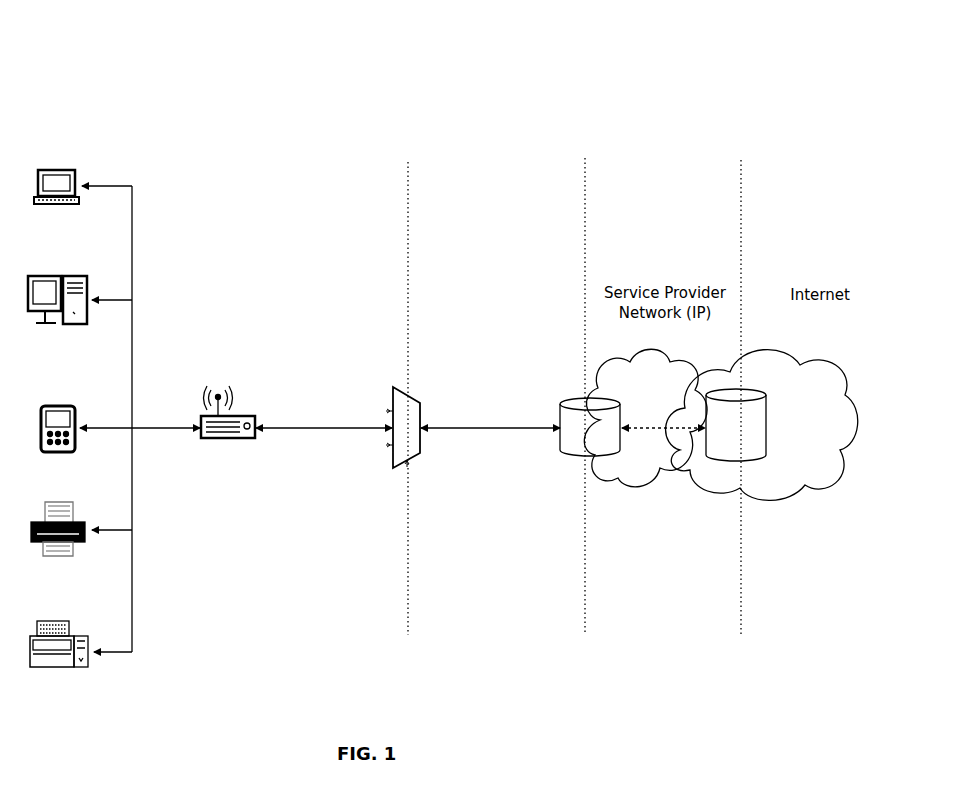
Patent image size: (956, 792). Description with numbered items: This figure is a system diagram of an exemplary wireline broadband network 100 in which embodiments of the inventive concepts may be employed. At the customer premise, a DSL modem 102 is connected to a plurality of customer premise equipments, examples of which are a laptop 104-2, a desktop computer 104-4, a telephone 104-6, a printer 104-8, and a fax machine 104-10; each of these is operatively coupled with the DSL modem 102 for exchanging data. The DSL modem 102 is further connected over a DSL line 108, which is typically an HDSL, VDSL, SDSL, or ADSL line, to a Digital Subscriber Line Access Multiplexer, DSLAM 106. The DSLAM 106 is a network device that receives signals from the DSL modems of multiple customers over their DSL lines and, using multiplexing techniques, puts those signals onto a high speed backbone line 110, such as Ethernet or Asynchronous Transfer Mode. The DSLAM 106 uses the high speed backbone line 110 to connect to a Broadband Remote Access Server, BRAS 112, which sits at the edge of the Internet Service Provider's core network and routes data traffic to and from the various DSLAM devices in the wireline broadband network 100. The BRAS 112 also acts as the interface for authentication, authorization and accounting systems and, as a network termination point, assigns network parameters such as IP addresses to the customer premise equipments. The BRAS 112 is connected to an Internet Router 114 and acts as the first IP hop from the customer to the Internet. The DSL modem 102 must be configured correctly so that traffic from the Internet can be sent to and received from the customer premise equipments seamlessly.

The wireline broadband network 100 is at (116, 60).
The DSL modem 102 is at (244, 417).
The laptop 104-2 is at (58, 171).
The desktop computer 104-4 is at (52, 277).
The telephone 104-6 is at (54, 406).
The printer 104-8 is at (54, 500).
The fax machine 104-10 is at (48, 630).
The Digital Subscriber Line Access Multiplexer (DSLAM) 106 is at (416, 398).
The DSL line 108 is at (307, 428).
The high speed backbone line 110 is at (482, 428).
The Broadband Remote Access Server (BRAS) 112 is at (618, 397).
The Internet Router 114 is at (766, 416).